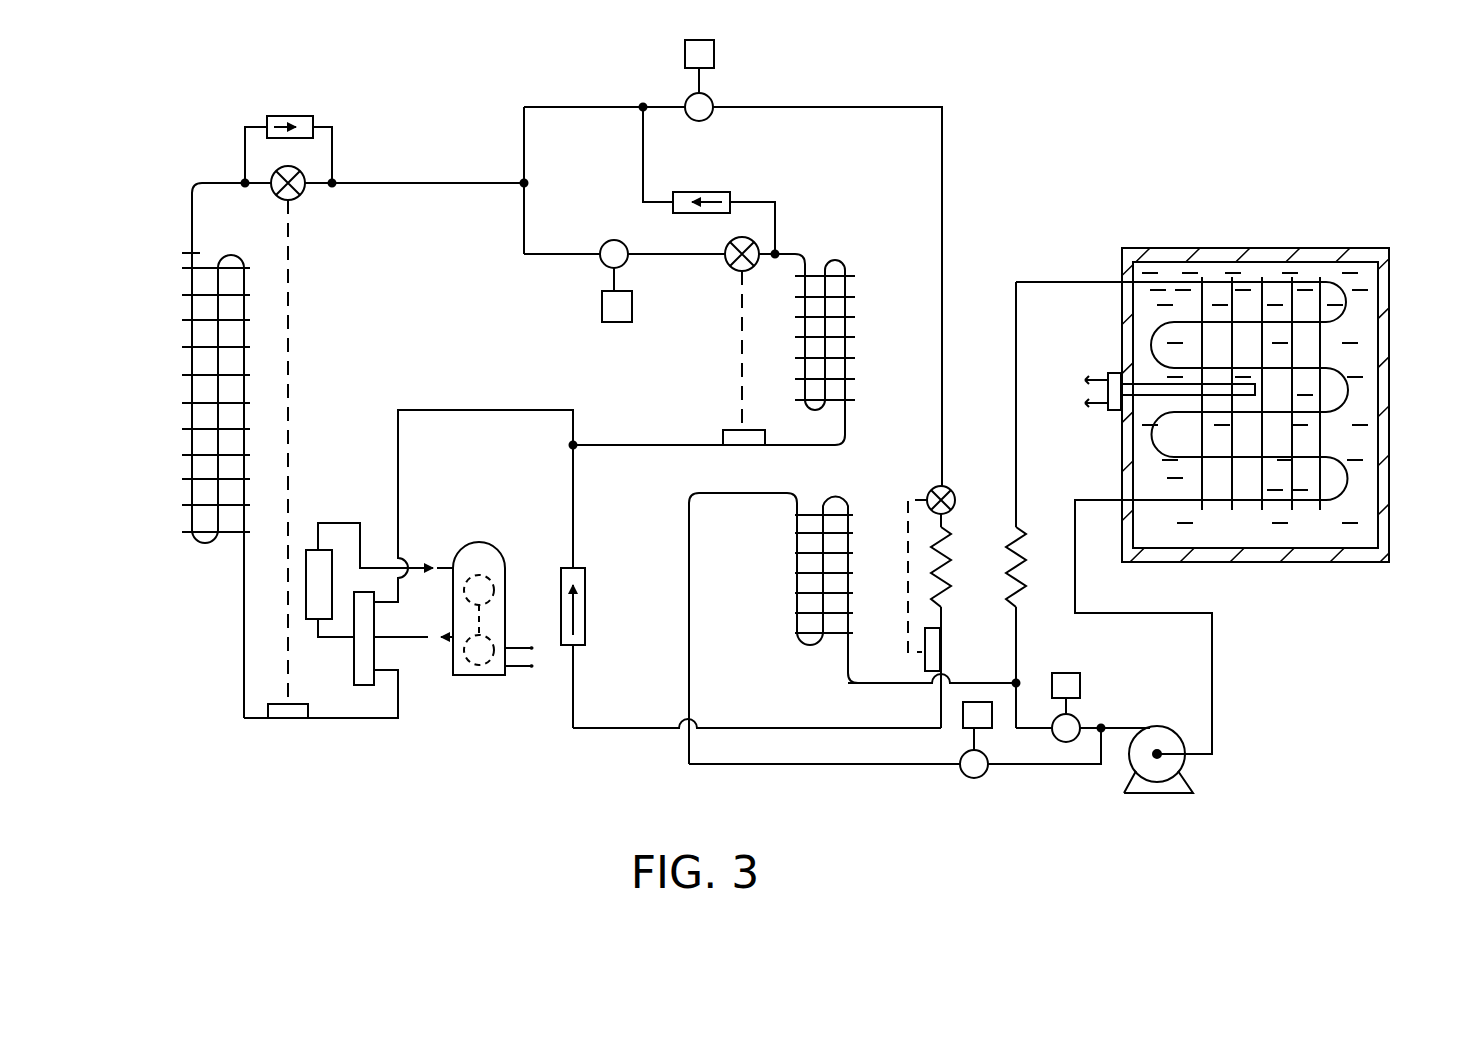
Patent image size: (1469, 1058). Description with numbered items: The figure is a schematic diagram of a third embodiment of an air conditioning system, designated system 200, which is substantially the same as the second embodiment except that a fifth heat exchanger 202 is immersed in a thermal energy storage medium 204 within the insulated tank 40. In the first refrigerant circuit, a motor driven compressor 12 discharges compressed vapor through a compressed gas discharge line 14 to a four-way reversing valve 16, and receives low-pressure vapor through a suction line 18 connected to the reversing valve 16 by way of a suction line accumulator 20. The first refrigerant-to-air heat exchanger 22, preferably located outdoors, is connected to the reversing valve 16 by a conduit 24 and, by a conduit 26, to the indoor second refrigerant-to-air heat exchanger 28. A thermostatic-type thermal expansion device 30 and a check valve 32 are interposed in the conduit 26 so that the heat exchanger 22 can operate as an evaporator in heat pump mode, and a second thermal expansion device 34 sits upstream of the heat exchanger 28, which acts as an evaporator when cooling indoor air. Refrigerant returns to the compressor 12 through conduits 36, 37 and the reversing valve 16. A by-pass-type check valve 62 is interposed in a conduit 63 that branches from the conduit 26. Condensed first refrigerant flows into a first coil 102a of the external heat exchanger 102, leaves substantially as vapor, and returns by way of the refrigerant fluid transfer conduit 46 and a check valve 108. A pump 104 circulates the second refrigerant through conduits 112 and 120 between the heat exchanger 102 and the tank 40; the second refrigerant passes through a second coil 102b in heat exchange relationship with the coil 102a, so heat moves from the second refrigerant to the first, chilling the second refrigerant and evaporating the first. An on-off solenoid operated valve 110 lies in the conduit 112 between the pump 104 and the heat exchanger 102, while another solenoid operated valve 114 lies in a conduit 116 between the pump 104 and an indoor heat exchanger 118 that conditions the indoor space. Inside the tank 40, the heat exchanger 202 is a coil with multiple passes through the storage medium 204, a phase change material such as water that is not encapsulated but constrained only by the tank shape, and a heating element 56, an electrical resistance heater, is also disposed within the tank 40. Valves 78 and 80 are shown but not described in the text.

The compressor 12 is at (467, 542).
The compressed gas discharge line 14 is at (408, 640).
The four-way reversing valve 16 is at (354, 672).
The suction line 18 is at (343, 523).
The suction line accumulator 20 is at (306, 615).
The first refrigerant-to-air heat exchanger 22 is at (244, 417).
The conduit 24 is at (244, 705).
The conduit 26 is at (408, 183).
The second refrigerant-to-air heat exchanger 28 is at (853, 288).
The thermal expansion device 30 is at (305, 193).
The check valve 32 is at (292, 116).
The second thermal expansion device 34 is at (728, 264).
The conduit 36 is at (410, 410).
The conduit 37 is at (640, 445).
The insulated tank 40 is at (1389, 350).
The refrigerant fluid transfer conduit 46 is at (855, 107).
The heating element 56 is at (1146, 392).
The by-pass-type check valve 62 is at (720, 192).
The conduit 63 is at (643, 160).
The pressure switch 78 is at (605, 242).
The pressure switch 80 is at (684, 95).
The heat exchanger 102 is at (960, 583).
The first coil 102a is at (933, 535).
The second coil 102b is at (1018, 532).
The pump 104 is at (1163, 772).
The check valve 108 is at (585, 620).
The solenoid operated valve 110 is at (1078, 720).
The conduit 112 is at (1080, 263).
The solenoid operated valve 114 is at (988, 775).
The conduit 116 is at (862, 686).
The indoor heat exchanger 118 is at (797, 603).
The conduit 120 is at (1212, 640).
The air conditioning system 200 is at (994, 96).
The fifth heat exchanger 202 is at (1345, 393).
The thermal energy storage medium 204 is at (1345, 455).